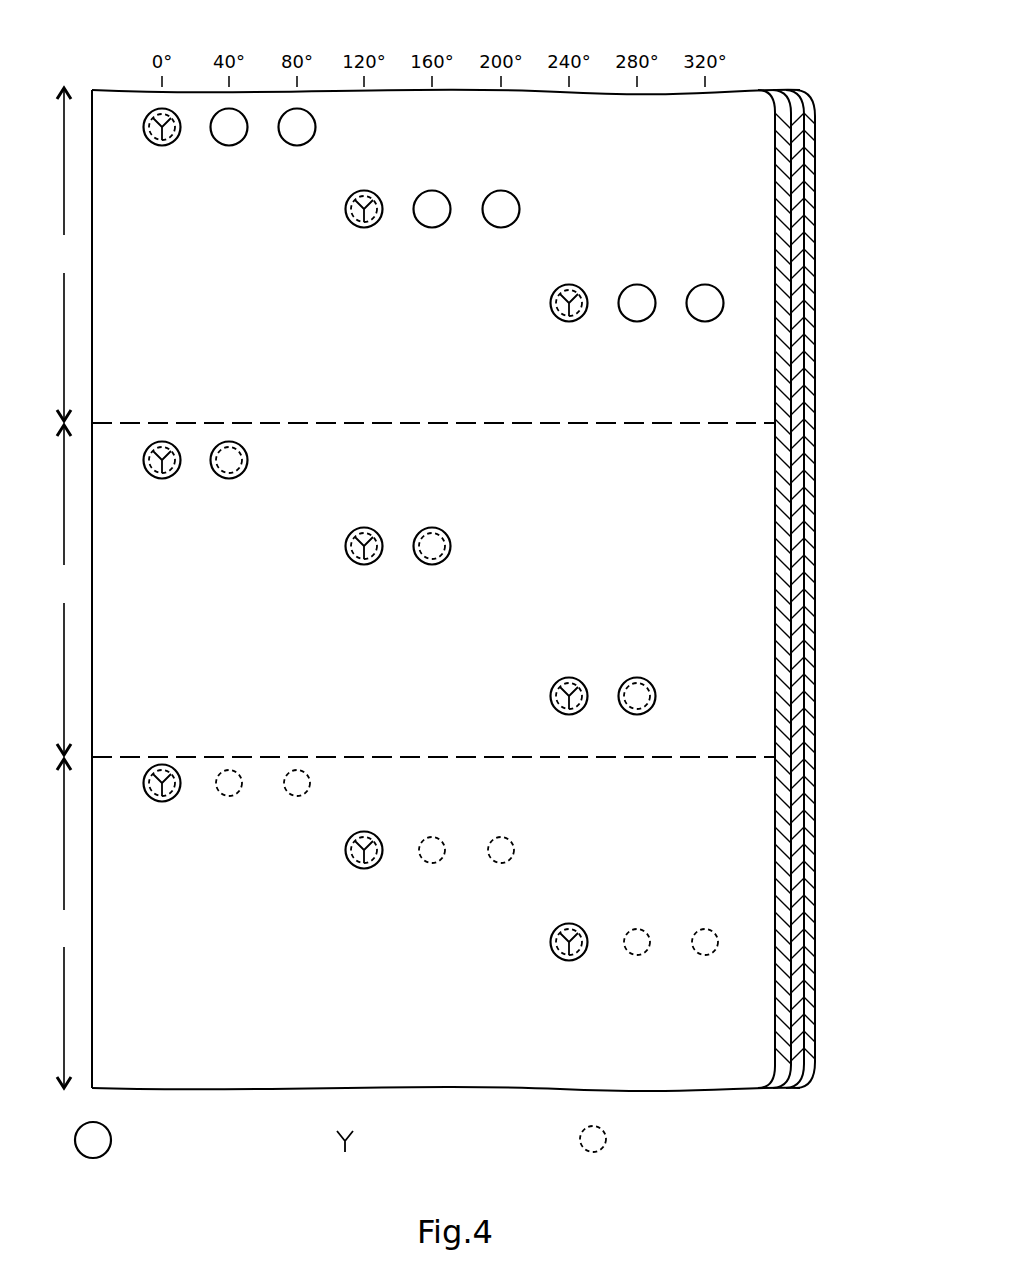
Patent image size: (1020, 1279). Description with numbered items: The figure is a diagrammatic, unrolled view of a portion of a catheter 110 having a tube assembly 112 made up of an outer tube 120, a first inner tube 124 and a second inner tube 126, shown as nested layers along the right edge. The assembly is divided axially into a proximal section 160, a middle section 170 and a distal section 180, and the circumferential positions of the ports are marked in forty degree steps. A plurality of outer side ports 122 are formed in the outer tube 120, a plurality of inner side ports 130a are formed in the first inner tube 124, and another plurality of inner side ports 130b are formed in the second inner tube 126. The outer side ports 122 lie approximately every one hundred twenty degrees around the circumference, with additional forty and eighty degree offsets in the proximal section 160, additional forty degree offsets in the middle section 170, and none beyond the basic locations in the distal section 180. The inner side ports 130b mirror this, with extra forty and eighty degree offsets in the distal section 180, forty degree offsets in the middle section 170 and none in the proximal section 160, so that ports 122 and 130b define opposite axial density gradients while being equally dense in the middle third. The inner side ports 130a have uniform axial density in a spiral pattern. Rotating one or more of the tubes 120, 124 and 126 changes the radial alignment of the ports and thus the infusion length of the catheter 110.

The catheter 110 is at (112, 49).
The tube assembly 112 is at (80, 89).
The outer tube 120 is at (782, 150).
The second inner tube 126 is at (797, 207).
The first inner tube 124 is at (813, 268).
The proximal section 160 is at (63, 254).
The middle section 170 is at (63, 590).
The distal section 180 is at (63, 923).
The outer side ports 122 is at (399, 634).
The inner side ports 130a is at (365, 635).
The inner side ports 130b is at (487, 633).